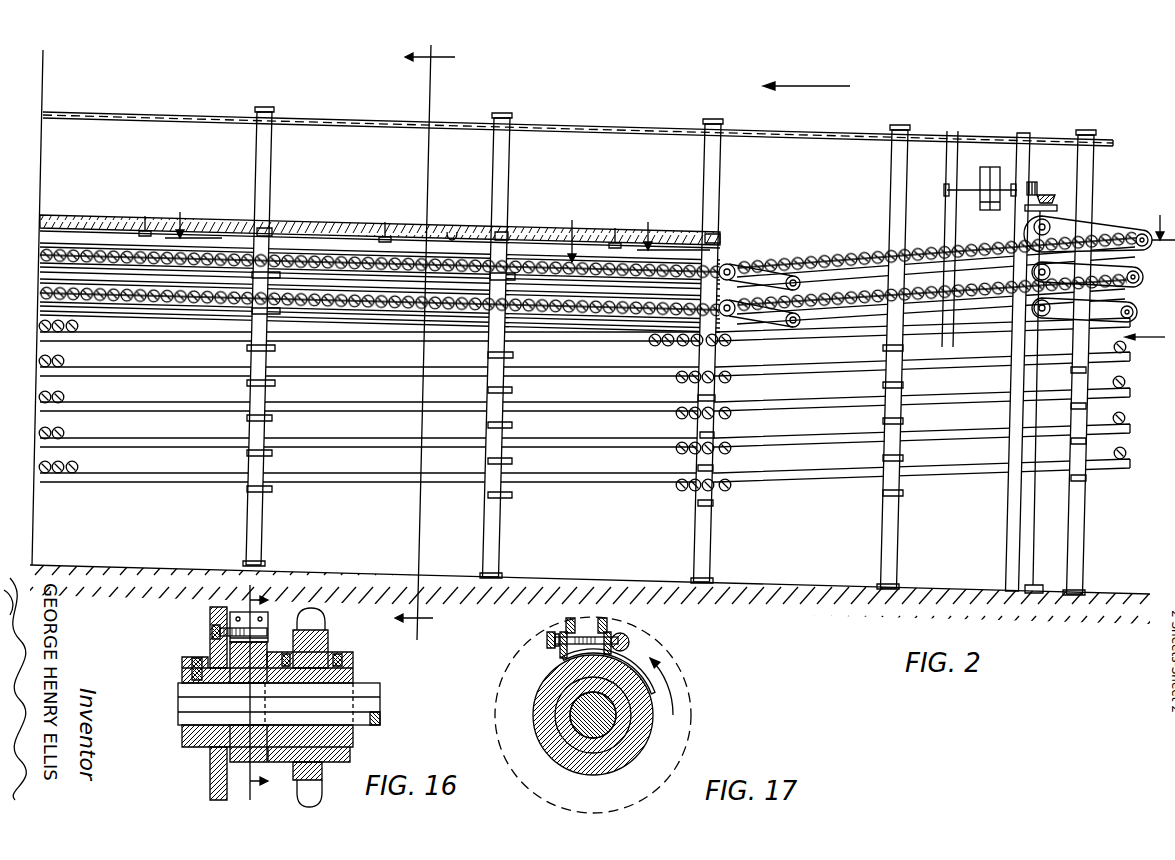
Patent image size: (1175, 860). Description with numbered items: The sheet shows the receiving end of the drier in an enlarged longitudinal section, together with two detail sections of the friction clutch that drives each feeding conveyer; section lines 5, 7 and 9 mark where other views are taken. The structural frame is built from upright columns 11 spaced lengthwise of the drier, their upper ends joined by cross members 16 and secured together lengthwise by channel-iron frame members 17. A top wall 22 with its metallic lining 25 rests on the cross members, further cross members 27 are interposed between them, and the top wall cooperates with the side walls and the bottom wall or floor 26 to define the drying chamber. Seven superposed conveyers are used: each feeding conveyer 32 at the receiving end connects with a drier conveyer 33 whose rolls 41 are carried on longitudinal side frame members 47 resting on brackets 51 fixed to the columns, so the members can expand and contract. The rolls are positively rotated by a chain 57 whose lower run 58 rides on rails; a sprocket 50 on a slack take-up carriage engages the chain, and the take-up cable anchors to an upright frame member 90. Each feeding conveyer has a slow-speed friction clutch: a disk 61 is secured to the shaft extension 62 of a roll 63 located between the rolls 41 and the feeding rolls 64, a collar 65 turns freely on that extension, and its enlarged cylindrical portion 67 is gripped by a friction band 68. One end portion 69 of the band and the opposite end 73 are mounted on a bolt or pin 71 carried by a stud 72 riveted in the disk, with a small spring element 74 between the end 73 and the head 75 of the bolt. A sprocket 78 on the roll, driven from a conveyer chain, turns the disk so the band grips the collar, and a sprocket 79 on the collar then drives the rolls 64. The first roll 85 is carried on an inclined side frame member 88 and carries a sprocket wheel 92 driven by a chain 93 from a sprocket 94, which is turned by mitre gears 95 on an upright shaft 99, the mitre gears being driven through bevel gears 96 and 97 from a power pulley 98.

In FIG. 2, the section line 5- 5 is at (906, 215).
In FIG. 2, the section line 7- 7 is at (428, 339).
In FIG. 2, the section line 9- 9 is at (374, 218).
In FIG. 2, the upright columns 11 is at (268, 163).
In FIG. 2, the cross members 16 is at (267, 230).
In FIG. 2, the frame members 17 is at (608, 125).
In FIG. 16, the frame members 17 is at (236, 696).
In FIG. 2, the top wall 22 is at (330, 222).
In FIG. 2, the metallic lining 25 is at (449, 233).
In FIG. 2, the bottom wall or floor 26 is at (127, 565).
In FIG. 2, the cross members 27 is at (142, 230).
In FIG. 2, the feeding conveyers 32 is at (830, 260).
In FIG. 2, the drier conveyer 33 is at (535, 258).
In FIG. 2, the rolls 41 is at (233, 260).
In FIG. 2, the side frame members 47 is at (340, 378).
In FIG. 2, the sprocket 50 is at (802, 283).
In FIG. 2, the brackets 51 is at (274, 385).
In FIG. 2, the chain 57 is at (95, 243).
In FIG. 2, the lower run of conveyer chain 58 is at (163, 272).
In FIG. 16, the disk 61 is at (210, 785).
In FIG. 17, the disk 61 is at (495, 705).
In FIG. 16, the shaft extension 62 is at (205, 698).
In FIG. 17, the shaft extension 62 is at (622, 720).
In FIG. 2, the roll 63 is at (740, 262).
In FIG. 2, the rolls 64 is at (882, 257).
In FIG. 16, the collar 65 is at (352, 746).
In FIG. 17, the collar 65 is at (545, 725).
In FIG. 16, the enlarged cylindrical portion 67 is at (230, 750).
In FIG. 17, the enlarged cylindrical portion 67 is at (645, 706).
In FIG. 16, the friction band 68 is at (230, 763).
In FIG. 17, the friction band 68 is at (656, 690).
In FIG. 17, the end portion of band 69 is at (608, 622).
In FIG. 16, the bolt or pin 71 is at (212, 633).
In FIG. 17, the bolt or pin 71 is at (588, 637).
In FIG. 16, the stud 72 is at (268, 628).
In FIG. 17, the stud 72 is at (631, 645).
In FIG. 17, the opposite end of band 73 is at (568, 620).
In FIG. 17, the spring element 74 is at (555, 648).
In FIG. 17, the head of bolt 75 is at (547, 640).
In FIG. 2, the sprocket 78 is at (730, 264).
In FIG. 16, the sprocket 79 is at (327, 641).
In FIG. 2, the first roll 85 is at (1143, 247).
In FIG. 2, the side frame member 88 is at (960, 440).
In FIG. 2, the upright frame member 90 is at (892, 160).
In FIG. 2, the sprocket wheel 92 is at (1142, 232).
In FIG. 2, the chain 93 is at (1117, 223).
In FIG. 2, the sprocket 94 is at (1052, 225).
In FIG. 2, the mitre gears 95 is at (1057, 212).
In FIG. 2, the bevel gear 96 is at (1052, 200).
In FIG. 2, the bevel gear 97 is at (1033, 182).
In FIG. 2, the pulley 98 is at (990, 167).
In FIG. 2, the upright shaft 99 is at (1037, 517).